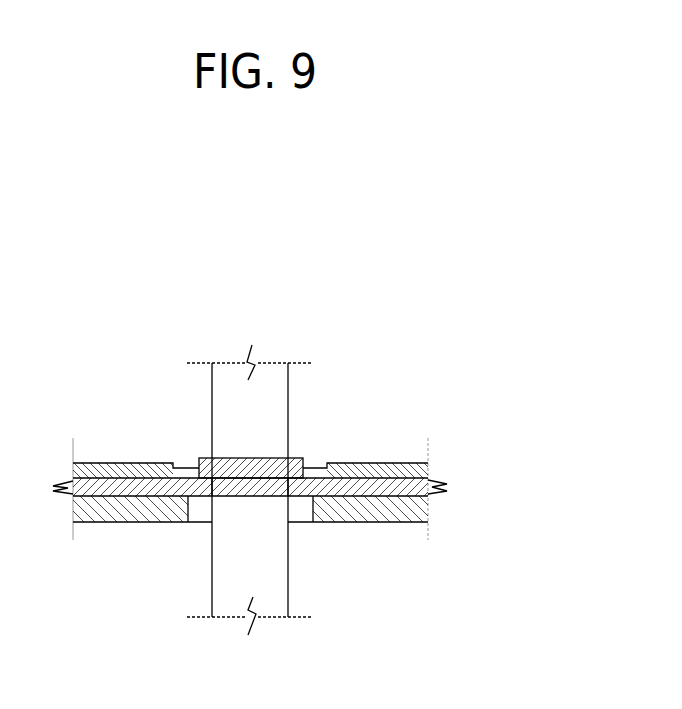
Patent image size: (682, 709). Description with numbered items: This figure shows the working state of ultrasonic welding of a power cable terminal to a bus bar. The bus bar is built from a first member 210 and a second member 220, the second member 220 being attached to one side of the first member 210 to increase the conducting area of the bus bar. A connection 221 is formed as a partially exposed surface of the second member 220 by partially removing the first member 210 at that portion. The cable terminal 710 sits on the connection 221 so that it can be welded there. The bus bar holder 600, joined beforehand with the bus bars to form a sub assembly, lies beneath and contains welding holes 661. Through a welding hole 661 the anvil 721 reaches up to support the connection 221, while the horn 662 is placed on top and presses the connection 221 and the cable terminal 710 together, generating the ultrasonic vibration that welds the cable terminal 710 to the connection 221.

The first member 210 is at (380, 468).
The second member 220 is at (433, 483).
The connection 221 is at (248, 487).
The bus bar holder 600 is at (417, 507).
The welding hole 661 is at (300, 512).
The horn 662 is at (273, 393).
The cable terminal 710 is at (232, 468).
The anvil 721 is at (272, 600).